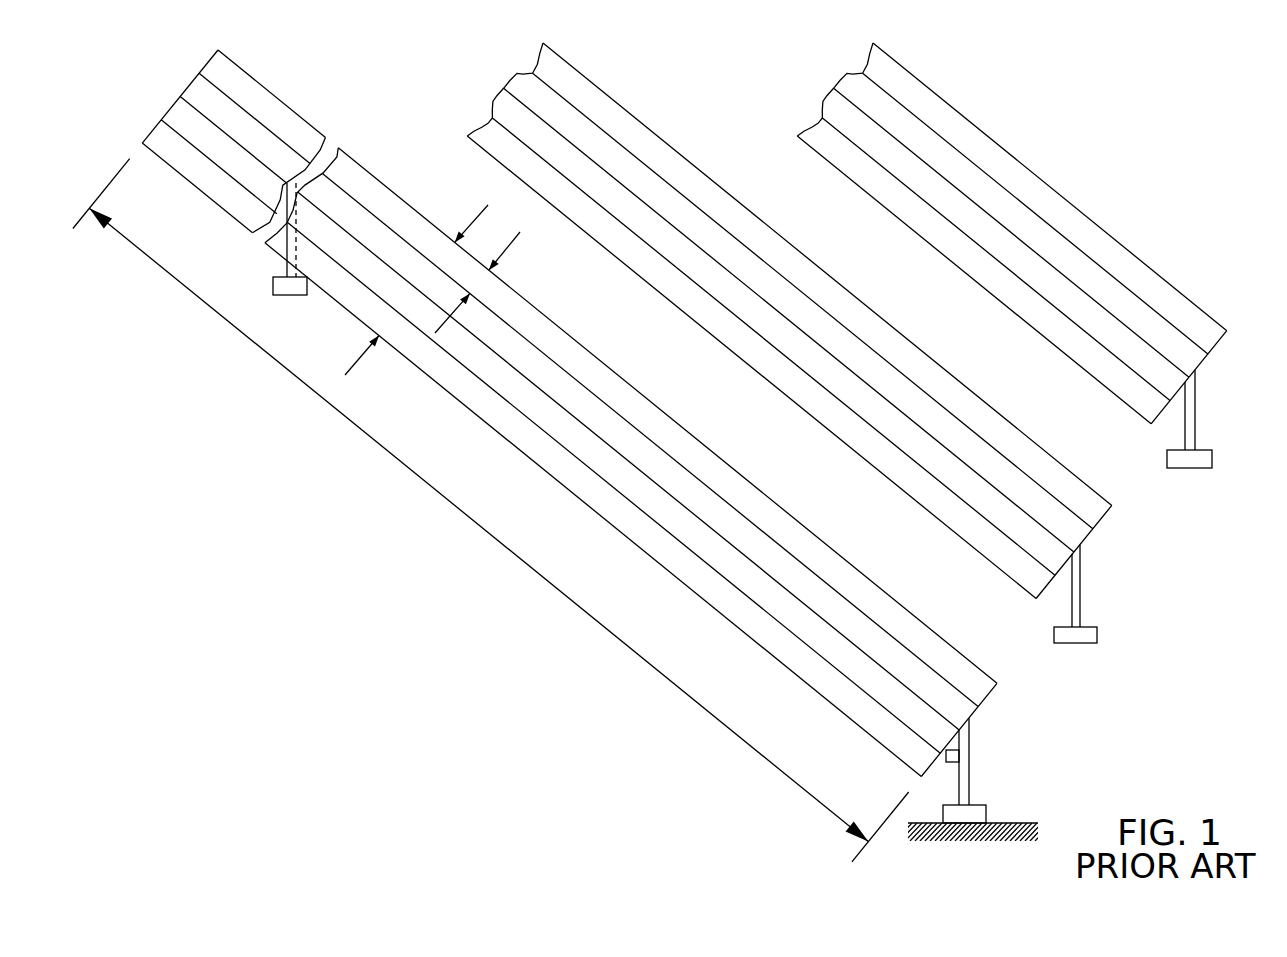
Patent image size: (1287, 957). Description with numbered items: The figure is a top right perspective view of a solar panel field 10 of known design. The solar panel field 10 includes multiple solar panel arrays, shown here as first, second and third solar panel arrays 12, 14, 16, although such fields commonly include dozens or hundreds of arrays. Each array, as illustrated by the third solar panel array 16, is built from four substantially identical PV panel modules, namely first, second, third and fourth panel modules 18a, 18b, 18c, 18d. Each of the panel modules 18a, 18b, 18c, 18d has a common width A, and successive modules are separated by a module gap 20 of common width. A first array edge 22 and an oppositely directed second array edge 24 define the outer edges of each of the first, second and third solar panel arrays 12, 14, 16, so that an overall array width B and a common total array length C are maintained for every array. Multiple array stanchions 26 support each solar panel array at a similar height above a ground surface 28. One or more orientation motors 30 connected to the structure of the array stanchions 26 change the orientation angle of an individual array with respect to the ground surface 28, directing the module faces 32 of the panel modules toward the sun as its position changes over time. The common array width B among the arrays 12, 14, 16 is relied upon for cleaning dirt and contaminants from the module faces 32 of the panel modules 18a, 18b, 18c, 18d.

The solar panel field 10 is at (1028, 123).
The first solar panel array 12 is at (1080, 210).
The second solar panel array 14 is at (966, 386).
The third solar panel array 16 is at (527, 297).
The first panel module 18a is at (797, 530).
The second panel module 18b is at (802, 577).
The third panel module 18c is at (805, 625).
The fourth panel module 18d is at (842, 703).
The module gap 20 is at (867, 615).
The first array edge 22 is at (738, 473).
The second array edge 24 is at (680, 582).
The array stanchions 26 is at (965, 775).
The ground surface 28 is at (1037, 832).
The orientation motor 30 is at (958, 755).
The module faces 32 is at (763, 645).